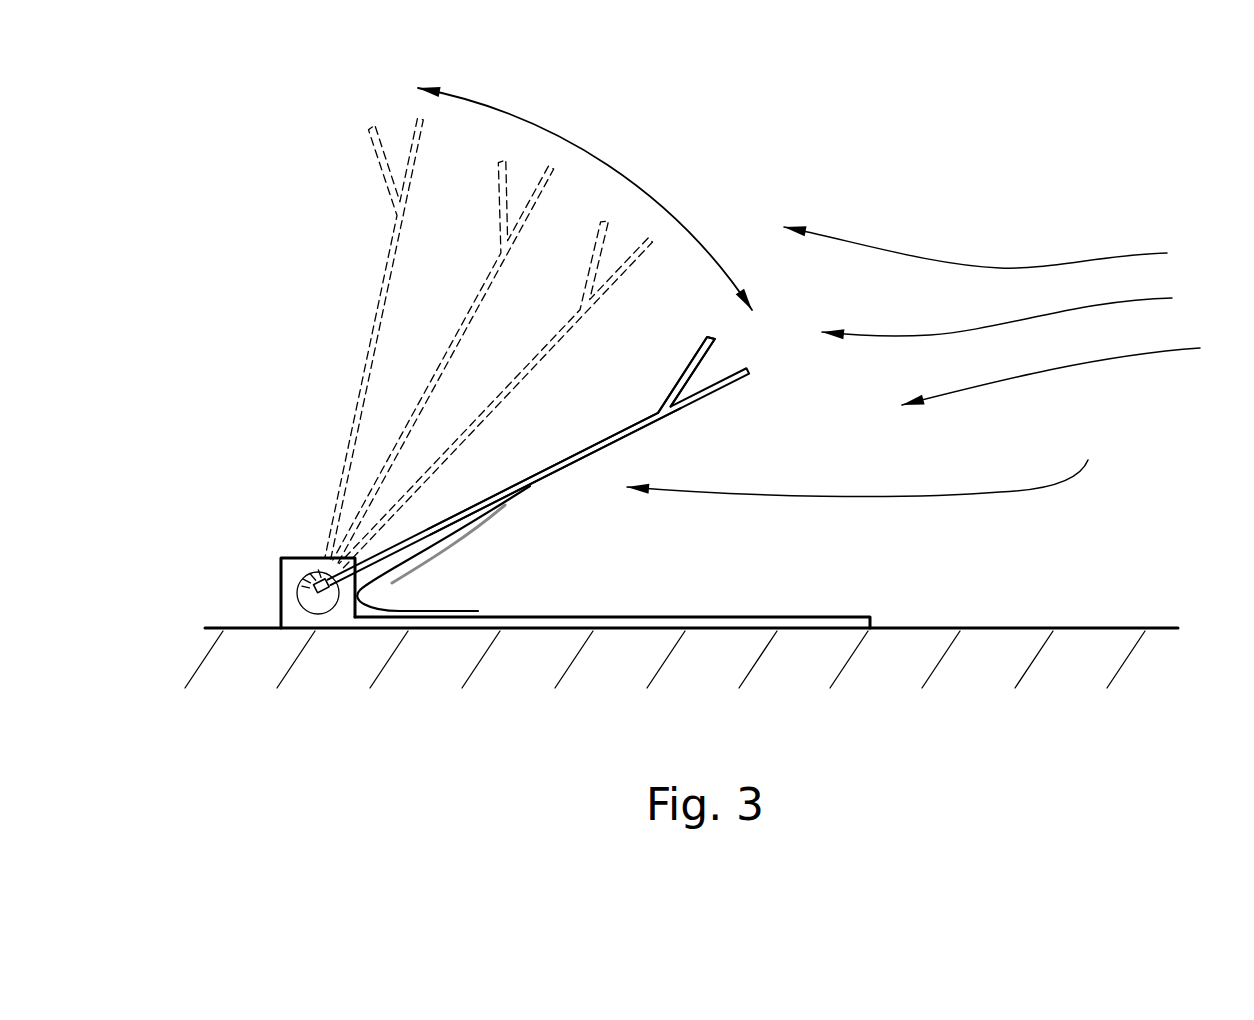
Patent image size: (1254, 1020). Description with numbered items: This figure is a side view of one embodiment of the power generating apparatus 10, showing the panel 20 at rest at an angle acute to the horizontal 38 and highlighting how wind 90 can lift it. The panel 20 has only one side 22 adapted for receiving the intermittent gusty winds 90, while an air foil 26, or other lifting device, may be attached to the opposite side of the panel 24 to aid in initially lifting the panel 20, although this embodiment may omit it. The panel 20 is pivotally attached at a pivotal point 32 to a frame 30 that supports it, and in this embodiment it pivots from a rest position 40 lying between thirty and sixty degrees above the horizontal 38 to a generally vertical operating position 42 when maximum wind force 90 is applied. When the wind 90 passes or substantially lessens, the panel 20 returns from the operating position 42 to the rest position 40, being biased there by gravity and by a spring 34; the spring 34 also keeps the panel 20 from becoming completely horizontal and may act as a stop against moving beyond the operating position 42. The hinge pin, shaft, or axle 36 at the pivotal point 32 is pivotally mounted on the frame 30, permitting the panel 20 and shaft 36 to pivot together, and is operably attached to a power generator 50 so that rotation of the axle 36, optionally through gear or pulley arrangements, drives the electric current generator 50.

The power generating apparatus 10 is at (267, 268).
The panel 20 is at (497, 498).
The side of the panel 22 is at (582, 462).
The opposite side of the panel 24 is at (620, 425).
The air foil 26 is at (705, 358).
The frame 30 is at (707, 621).
The pivotal attachment 32 is at (300, 590).
The spring 34 is at (387, 615).
The hinge pin, shaft, or axle 36 is at (313, 606).
The horizontal 38 is at (998, 632).
The rest position 40 is at (865, 465).
The vertical operating position 42 is at (365, 247).
The power generator 50 is at (283, 568).
The wind 90 is at (1113, 253).